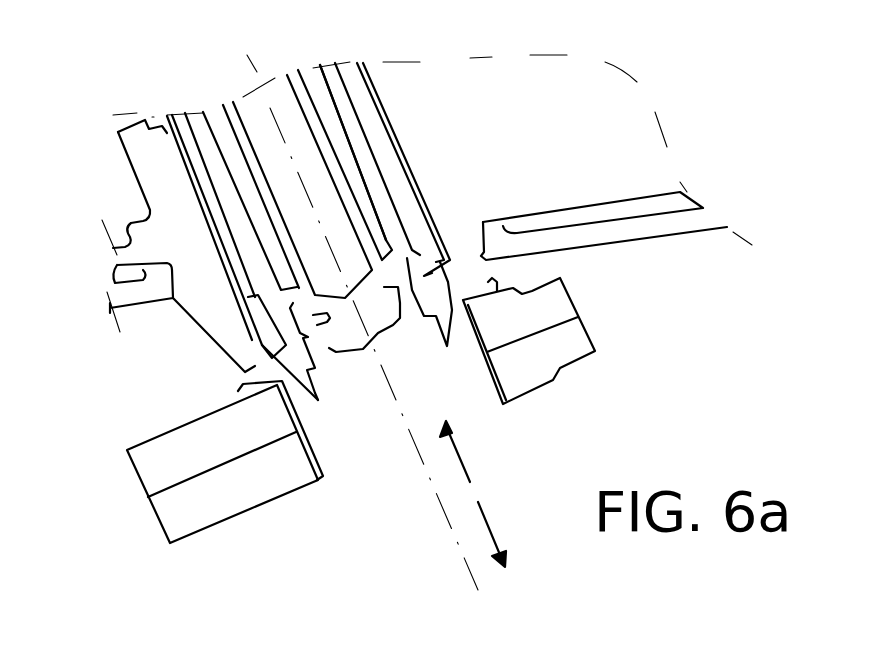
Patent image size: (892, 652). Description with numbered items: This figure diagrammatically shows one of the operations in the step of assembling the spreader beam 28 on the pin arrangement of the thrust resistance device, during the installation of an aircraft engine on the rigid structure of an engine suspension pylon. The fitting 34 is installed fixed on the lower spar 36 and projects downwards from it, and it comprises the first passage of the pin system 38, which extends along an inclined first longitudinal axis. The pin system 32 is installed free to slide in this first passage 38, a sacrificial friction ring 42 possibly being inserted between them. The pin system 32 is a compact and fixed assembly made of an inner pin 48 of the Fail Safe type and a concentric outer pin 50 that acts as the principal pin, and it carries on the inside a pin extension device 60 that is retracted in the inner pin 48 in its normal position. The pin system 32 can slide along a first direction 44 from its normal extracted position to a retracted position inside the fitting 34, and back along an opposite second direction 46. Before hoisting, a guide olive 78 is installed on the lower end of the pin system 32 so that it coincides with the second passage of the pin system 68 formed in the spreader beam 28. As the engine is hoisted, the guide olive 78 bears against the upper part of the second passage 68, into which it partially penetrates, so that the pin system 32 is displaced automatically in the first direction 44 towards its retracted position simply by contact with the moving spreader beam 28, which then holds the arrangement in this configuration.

The spreader beam 28 is at (183, 525).
The pin system 32 is at (425, 169).
The fitting 34 is at (203, 347).
The lower spar 36 is at (120, 275).
The first passage of the pin system 38 is at (213, 237).
The sacrificial friction ring 42 is at (247, 317).
The first direction 44 is at (462, 455).
The second direction 46 is at (490, 525).
The inner pin 48 is at (397, 227).
The outer pin 50 is at (392, 168).
The pin extension device 60 is at (322, 140).
The second passage of the pin system 68 is at (300, 423).
The guide olive 78 is at (456, 312).